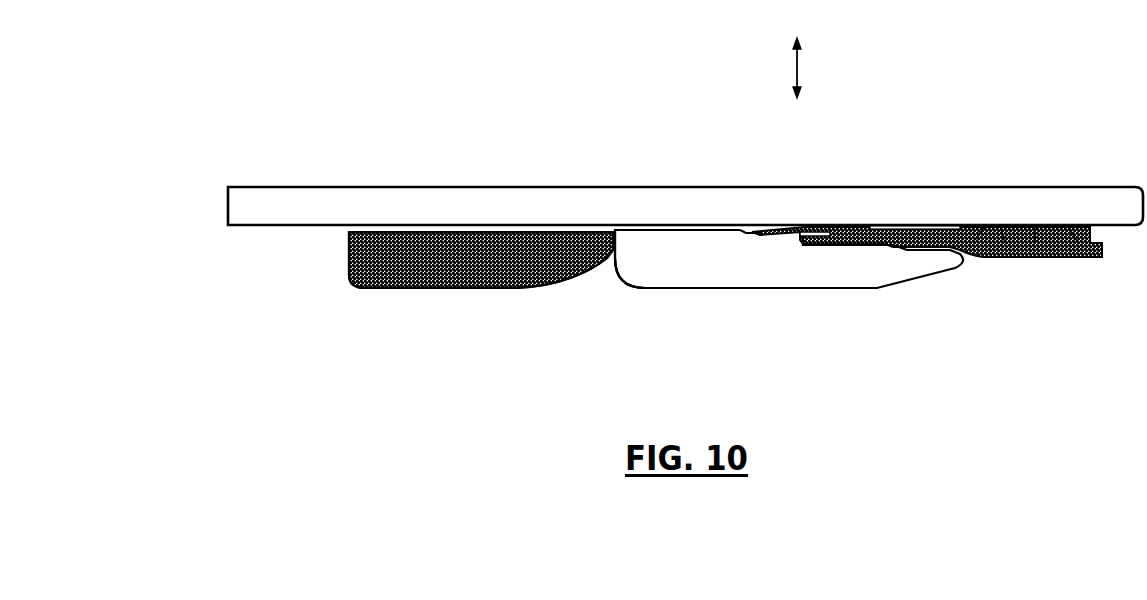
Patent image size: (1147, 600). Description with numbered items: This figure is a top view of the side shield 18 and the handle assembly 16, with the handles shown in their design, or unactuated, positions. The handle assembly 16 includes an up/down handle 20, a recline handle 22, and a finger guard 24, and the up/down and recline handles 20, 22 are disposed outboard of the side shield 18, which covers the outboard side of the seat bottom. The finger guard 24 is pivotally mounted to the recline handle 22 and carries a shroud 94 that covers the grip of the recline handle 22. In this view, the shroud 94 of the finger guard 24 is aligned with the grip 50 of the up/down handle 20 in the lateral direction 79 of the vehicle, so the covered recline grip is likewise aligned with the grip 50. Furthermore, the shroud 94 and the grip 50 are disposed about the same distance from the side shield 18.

The handle assembly 16 is at (812, 328).
The side shield 18 is at (279, 249).
The up/down handle 20 is at (385, 330).
The recline handle 22 is at (995, 278).
The finger guard 24 is at (685, 304).
The grip 50 is at (455, 265).
The lateral direction 79 is at (797, 66).
The shroud 94 is at (730, 280).